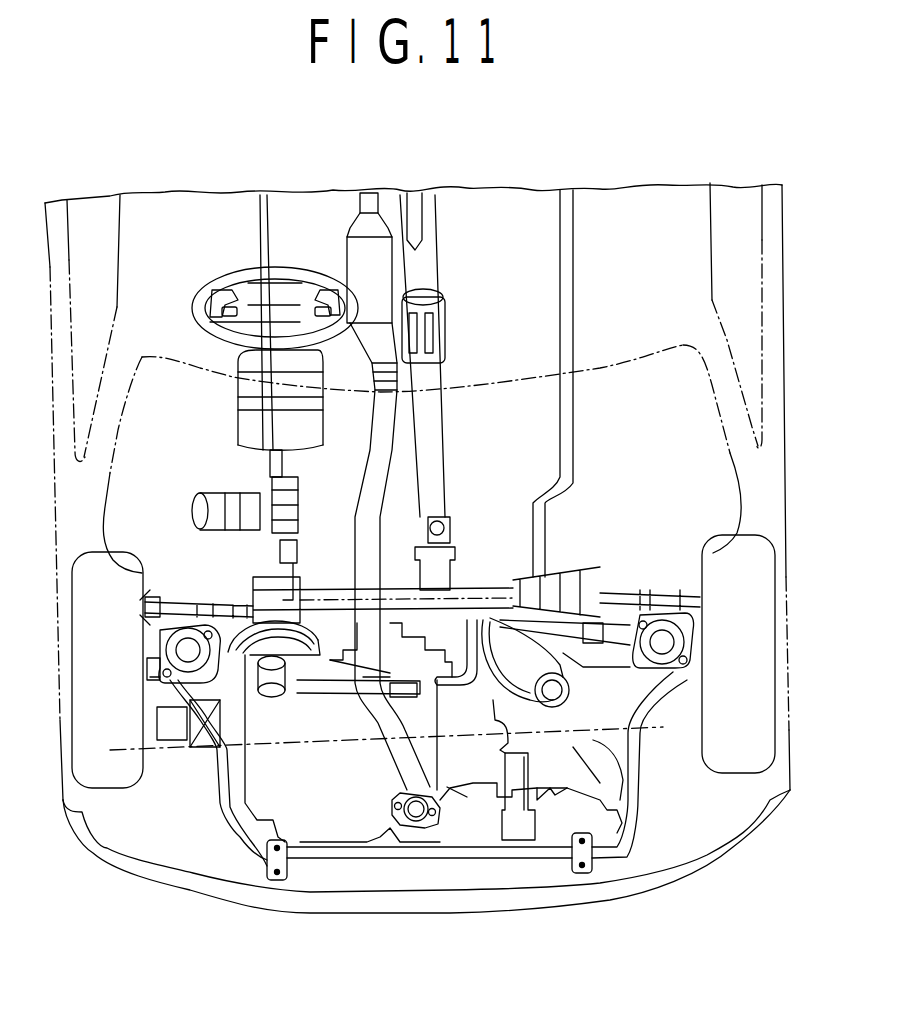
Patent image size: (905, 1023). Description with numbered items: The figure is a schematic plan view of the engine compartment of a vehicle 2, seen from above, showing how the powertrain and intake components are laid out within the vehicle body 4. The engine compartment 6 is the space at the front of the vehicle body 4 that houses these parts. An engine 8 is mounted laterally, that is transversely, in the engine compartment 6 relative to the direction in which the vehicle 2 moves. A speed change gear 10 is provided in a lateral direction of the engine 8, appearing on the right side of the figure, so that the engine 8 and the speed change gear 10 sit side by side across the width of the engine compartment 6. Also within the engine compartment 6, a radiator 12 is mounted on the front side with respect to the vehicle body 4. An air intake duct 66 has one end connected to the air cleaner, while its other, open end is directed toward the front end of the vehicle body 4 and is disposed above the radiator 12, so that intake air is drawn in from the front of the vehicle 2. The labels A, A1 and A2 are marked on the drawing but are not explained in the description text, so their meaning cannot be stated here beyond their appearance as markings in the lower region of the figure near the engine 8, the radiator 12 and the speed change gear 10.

The vehicle 2 is at (720, 123).
The vehicle body 4 is at (752, 500).
The engine compartment 6 is at (247, 807).
The engine 8 is at (372, 820).
The speed change gear 10 is at (600, 753).
The radiator 12 is at (557, 833).
The air intake duct 66 is at (520, 828).
The axle center line A is at (330, 742).
The left side region A1 is at (180, 780).
The right side region A2 is at (592, 768).